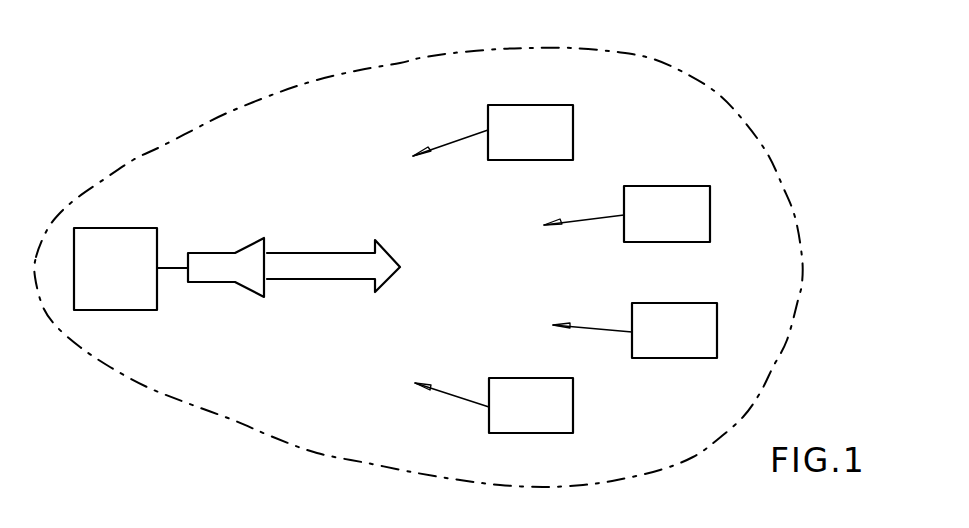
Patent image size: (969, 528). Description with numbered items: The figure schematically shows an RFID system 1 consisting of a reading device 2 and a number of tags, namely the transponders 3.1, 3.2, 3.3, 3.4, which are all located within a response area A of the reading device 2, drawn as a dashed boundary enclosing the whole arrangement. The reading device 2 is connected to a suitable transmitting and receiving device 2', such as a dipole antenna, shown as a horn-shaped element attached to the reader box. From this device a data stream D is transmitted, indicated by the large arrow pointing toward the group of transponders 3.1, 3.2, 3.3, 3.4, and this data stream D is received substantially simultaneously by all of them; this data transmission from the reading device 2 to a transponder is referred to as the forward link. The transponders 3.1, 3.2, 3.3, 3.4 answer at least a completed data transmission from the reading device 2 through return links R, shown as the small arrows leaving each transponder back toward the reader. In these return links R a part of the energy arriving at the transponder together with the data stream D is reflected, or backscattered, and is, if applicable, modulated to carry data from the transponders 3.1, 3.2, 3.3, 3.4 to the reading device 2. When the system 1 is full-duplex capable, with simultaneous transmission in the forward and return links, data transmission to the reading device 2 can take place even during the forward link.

The RFID system 1 is at (127, 73).
The response area A is at (141, 153).
The reading device 2 is at (131, 250).
The transmitting and receiving device 2' is at (226, 301).
The data stream D is at (337, 280).
The transponder 3.1 is at (575, 118).
The transponder 3.2 is at (711, 205).
The transponder 3.3 is at (718, 330).
The transponder 3.4 is at (574, 410).
The return link R is at (604, 322).